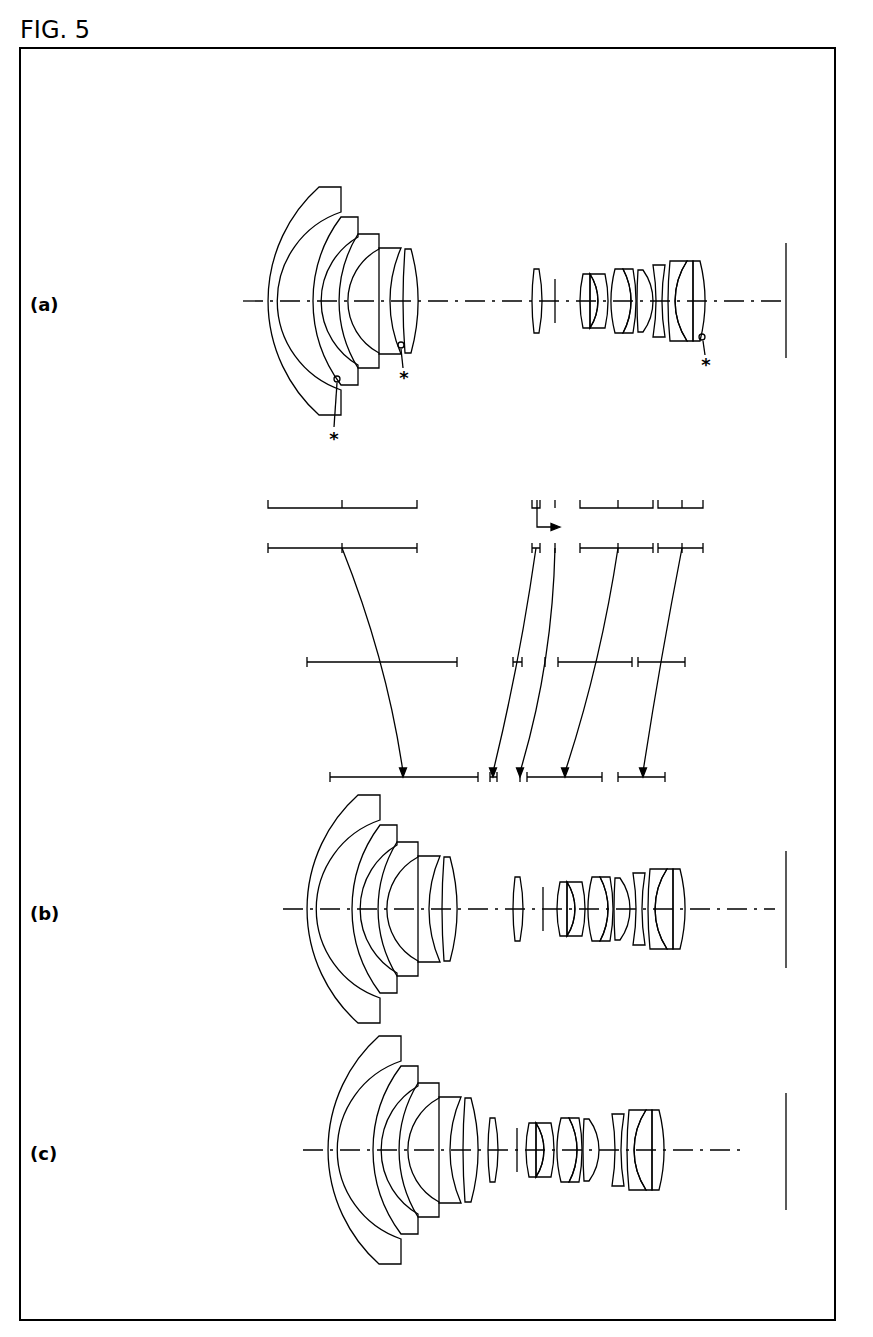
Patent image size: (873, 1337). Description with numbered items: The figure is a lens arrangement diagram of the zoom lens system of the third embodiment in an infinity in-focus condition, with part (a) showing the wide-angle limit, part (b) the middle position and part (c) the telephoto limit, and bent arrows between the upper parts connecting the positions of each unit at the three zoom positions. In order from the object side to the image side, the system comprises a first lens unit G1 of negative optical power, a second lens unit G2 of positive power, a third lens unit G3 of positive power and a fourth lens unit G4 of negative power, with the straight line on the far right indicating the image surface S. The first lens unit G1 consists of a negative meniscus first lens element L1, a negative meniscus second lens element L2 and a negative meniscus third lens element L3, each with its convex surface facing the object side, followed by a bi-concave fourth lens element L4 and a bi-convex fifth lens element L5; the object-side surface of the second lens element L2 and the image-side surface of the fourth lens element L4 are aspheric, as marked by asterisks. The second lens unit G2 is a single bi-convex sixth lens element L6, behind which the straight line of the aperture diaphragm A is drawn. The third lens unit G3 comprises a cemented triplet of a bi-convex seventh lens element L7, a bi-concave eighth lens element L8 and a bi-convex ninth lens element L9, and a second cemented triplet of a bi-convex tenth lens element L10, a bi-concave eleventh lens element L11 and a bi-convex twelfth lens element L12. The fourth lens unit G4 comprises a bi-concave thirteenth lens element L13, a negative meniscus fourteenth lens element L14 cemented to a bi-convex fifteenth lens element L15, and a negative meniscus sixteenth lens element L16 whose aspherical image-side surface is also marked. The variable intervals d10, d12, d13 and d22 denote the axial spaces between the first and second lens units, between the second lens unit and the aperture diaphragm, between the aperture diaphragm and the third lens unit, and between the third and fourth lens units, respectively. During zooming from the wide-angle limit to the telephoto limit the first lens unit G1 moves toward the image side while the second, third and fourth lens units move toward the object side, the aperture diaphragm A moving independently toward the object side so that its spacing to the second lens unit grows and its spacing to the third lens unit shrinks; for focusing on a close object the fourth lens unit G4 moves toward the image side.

The first lens element L1 is at (321, 190).
The second lens element L2 is at (347, 227).
The third lens element L3 is at (368, 243).
The fourth lens element L4 is at (392, 254).
The fifth lens element L5 is at (411, 253).
The sixth lens element L6 is at (537, 270).
The aperture diaphragm A is at (553, 278).
The seventh lens element L7 is at (583, 274).
The eighth lens element L8 is at (590, 274).
The ninth lens element L9 is at (598, 274).
The tenth lens element L10 is at (606, 273).
The eleventh lens element L11 is at (627, 269).
The twelfth lens element L12 is at (643, 269).
The thirteenth lens element L13 is at (660, 265).
The fourteenth lens element L14 is at (672, 261).
The fifteenth lens element L15 is at (687, 261).
The sixteenth lens element L16 is at (700, 262).
The image surface S is at (786, 273).
The variable interval d10 is at (475, 302).
The variable interval d12 is at (548, 303).
The variable interval d13 is at (568, 303).
The variable interval d22 is at (659, 302).
The first lens unit G1 is at (373, 631).
The second lens unit G2 is at (526, 631).
The third lens unit G3 is at (590, 631).
The fourth lens unit G4 is at (660, 631).